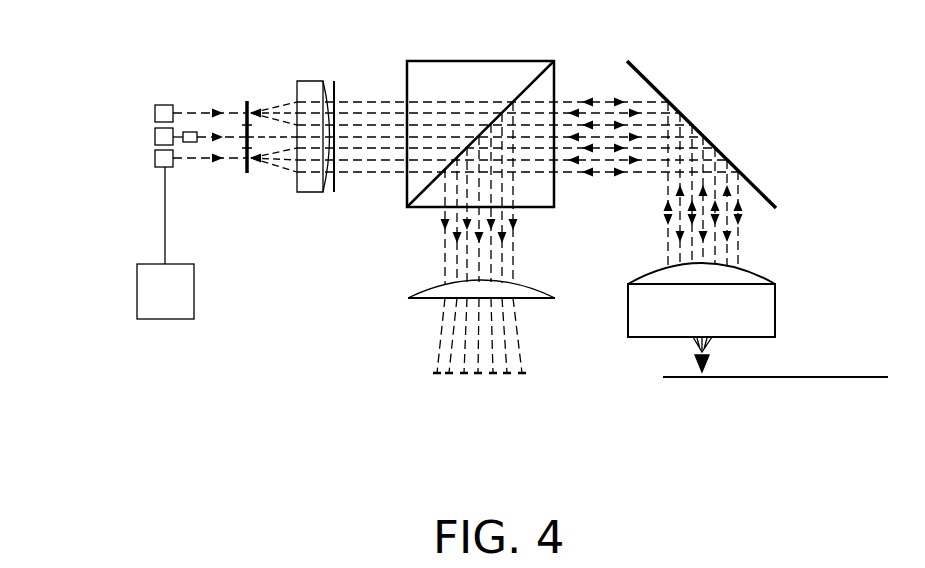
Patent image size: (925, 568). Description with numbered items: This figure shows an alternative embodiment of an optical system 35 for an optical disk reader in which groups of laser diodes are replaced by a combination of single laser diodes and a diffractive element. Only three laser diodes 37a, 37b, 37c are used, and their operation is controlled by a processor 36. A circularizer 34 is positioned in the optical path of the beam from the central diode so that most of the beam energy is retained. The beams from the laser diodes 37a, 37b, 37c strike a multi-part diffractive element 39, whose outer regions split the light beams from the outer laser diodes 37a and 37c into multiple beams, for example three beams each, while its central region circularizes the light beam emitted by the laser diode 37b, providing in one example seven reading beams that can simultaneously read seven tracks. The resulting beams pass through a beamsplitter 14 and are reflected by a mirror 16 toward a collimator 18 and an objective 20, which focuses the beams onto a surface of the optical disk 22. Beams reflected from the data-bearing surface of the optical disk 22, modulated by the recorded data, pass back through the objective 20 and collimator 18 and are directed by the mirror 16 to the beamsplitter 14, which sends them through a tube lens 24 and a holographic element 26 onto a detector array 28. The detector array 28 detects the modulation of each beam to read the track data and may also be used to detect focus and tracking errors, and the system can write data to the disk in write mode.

The beamsplitter 14 is at (447, 60).
The mirror 16 is at (647, 75).
The collimator 18 is at (300, 193).
The objective 20 is at (777, 297).
The optical disk 22 is at (800, 377).
The tube lens 24 is at (430, 283).
The holographic element 26 is at (540, 302).
The detector array 28 is at (493, 378).
The circularizer 34 is at (192, 131).
The optical system 35 is at (810, 110).
The processor 36 is at (194, 293).
The laser diode 37a is at (155, 112).
The laser diode 37b is at (155, 136).
The laser diode 37c is at (155, 162).
The diffractive element 39 is at (248, 173).